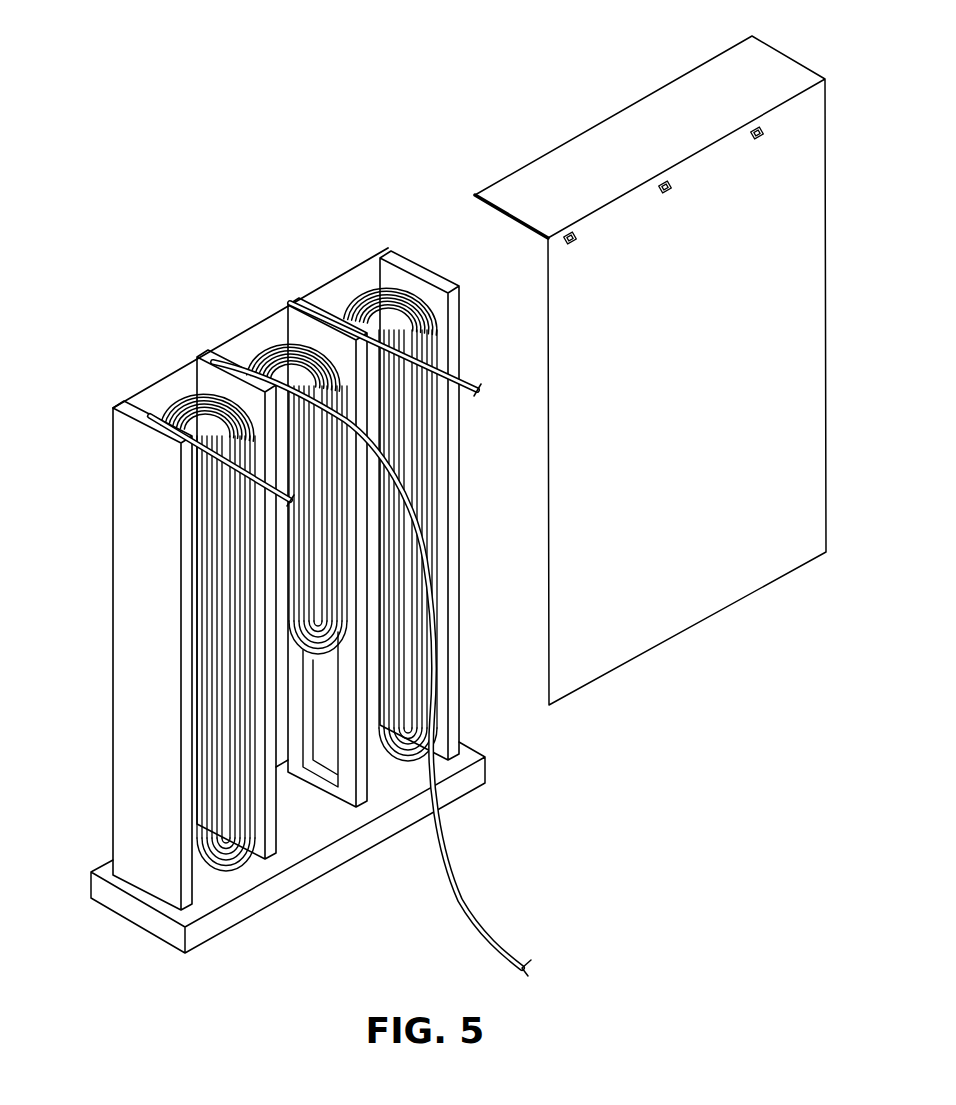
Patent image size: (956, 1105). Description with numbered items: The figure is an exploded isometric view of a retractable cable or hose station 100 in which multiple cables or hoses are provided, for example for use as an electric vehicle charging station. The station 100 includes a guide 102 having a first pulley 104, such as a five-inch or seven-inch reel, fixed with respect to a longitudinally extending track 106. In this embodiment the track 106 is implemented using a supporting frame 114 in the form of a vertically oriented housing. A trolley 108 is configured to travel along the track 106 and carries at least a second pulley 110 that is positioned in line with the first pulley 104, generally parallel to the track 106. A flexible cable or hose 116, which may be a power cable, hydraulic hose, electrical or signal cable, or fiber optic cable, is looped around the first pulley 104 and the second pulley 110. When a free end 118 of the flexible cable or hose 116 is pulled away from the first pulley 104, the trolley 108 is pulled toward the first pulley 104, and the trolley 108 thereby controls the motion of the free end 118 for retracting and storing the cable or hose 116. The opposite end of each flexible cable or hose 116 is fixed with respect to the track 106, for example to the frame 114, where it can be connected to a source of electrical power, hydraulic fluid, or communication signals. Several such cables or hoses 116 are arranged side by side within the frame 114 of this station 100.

The retractable cable or hose station 100 is at (706, 0).
The guide 102 is at (288, 579).
The first pulley 104 is at (165, 412).
The longitudinally extending track 106 is at (192, 640).
The trolley 108 is at (432, 675).
The second pulley 110 is at (257, 827).
The supporting frame 114 is at (105, 642).
The flexible cable or hose 116 is at (207, 752).
The free end 118 is at (257, 480).